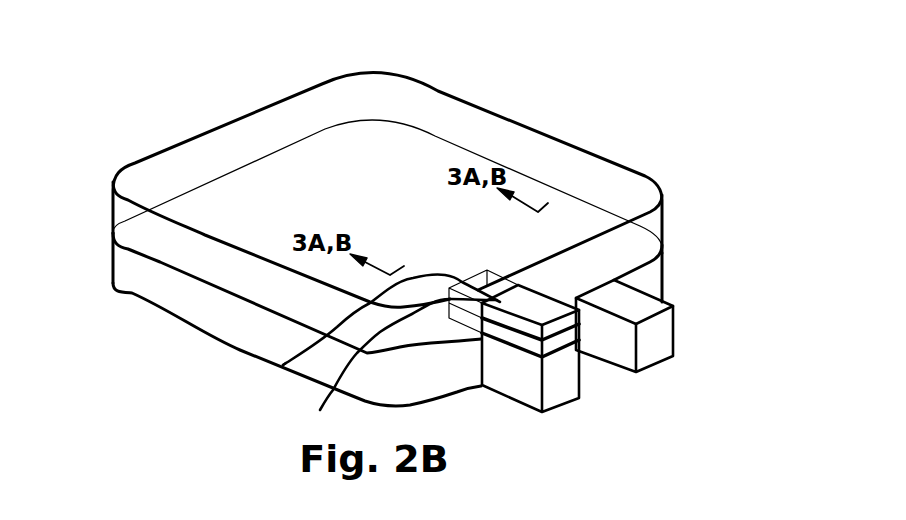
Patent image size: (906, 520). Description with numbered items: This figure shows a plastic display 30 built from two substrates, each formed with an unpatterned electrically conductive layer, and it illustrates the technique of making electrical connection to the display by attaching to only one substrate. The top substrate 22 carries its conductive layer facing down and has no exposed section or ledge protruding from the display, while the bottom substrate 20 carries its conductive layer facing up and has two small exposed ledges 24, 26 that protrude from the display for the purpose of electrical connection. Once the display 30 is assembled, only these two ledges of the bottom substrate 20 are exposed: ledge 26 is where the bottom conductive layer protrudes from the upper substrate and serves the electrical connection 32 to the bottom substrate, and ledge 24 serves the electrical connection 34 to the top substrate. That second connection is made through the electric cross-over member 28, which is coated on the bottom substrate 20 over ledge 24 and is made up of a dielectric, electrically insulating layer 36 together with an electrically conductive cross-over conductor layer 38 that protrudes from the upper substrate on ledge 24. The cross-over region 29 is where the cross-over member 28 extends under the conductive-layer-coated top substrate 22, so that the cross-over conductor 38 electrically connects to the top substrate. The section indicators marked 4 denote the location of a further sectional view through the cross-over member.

The bottom substrate 20 is at (650, 268).
The top substrate 22 is at (597, 180).
The ledge 24 is at (550, 383).
The ledge 26 is at (667, 338).
The electric cross-over member 28 is at (508, 372).
The cross-over region 29 is at (283, 365).
The display 30 is at (62, 250).
The electrical connection 32 is at (702, 291).
The electrical connection 34 is at (391, 349).
The dielectric electrically insulating layer 36 is at (574, 342).
The cross-over conductor layer 38 is at (548, 312).
The section view indicator 4 is at (370, 352).